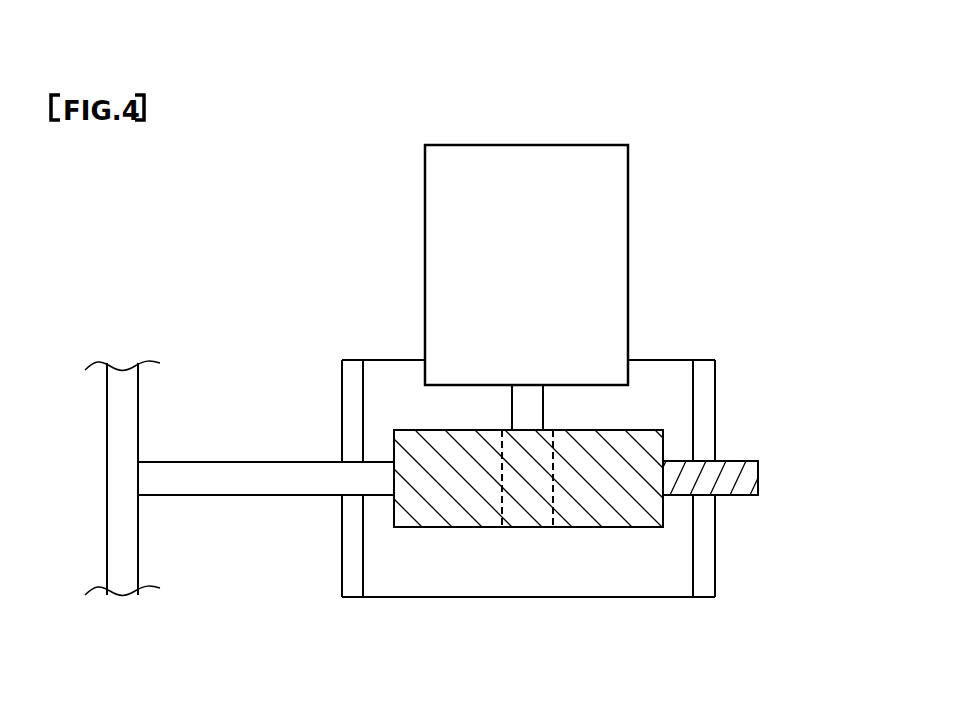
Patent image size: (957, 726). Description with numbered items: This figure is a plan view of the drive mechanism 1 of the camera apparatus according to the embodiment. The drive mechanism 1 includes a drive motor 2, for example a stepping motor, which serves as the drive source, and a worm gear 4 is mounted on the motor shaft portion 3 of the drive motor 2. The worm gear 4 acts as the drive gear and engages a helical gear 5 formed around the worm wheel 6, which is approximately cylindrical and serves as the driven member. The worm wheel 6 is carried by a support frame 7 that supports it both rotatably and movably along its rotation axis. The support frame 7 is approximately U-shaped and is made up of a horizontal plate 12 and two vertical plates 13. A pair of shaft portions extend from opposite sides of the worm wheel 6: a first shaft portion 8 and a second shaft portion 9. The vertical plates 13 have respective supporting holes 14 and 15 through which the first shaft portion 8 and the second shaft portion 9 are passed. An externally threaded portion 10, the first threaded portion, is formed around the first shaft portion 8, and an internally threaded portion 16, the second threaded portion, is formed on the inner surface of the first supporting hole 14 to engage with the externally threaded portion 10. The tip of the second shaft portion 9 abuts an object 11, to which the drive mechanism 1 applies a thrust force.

The drive mechanism 1 is at (679, 78).
The drive motor 2 is at (628, 265).
The motor shaft portion 3 is at (543, 412).
The worm gear 4 is at (563, 478).
The helical gear 5 is at (463, 510).
The worm wheel 6 is at (488, 540).
The support frame 7 is at (657, 612).
The first shaft portion 8 is at (750, 460).
The second shaft portion 9 is at (225, 497).
The externally threaded portion 10 is at (748, 483).
The object 11 is at (140, 405).
The horizontal plate 12 is at (395, 597).
The vertical plates 13 is at (342, 543).
The first supporting hole 14 is at (733, 460).
The second supporting hole 15 is at (342, 460).
The internally threaded portion 16 is at (740, 495).